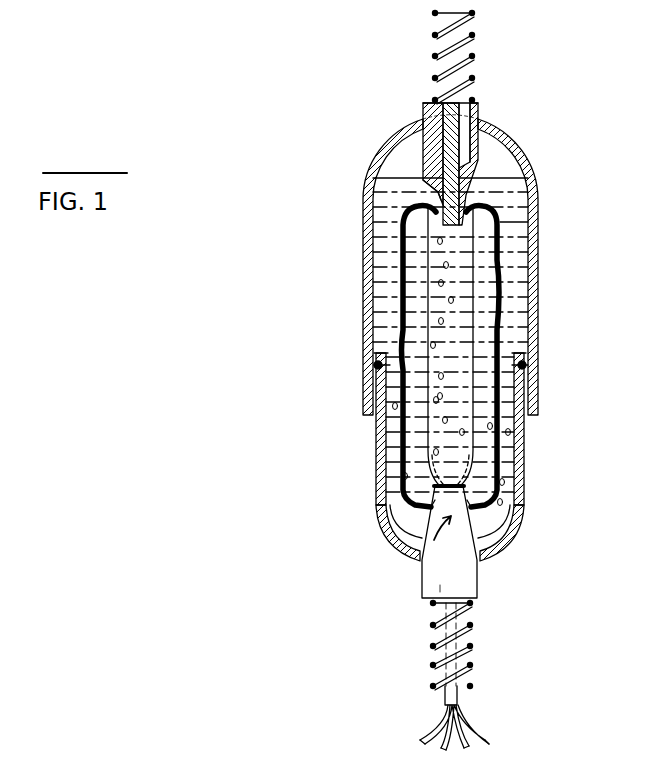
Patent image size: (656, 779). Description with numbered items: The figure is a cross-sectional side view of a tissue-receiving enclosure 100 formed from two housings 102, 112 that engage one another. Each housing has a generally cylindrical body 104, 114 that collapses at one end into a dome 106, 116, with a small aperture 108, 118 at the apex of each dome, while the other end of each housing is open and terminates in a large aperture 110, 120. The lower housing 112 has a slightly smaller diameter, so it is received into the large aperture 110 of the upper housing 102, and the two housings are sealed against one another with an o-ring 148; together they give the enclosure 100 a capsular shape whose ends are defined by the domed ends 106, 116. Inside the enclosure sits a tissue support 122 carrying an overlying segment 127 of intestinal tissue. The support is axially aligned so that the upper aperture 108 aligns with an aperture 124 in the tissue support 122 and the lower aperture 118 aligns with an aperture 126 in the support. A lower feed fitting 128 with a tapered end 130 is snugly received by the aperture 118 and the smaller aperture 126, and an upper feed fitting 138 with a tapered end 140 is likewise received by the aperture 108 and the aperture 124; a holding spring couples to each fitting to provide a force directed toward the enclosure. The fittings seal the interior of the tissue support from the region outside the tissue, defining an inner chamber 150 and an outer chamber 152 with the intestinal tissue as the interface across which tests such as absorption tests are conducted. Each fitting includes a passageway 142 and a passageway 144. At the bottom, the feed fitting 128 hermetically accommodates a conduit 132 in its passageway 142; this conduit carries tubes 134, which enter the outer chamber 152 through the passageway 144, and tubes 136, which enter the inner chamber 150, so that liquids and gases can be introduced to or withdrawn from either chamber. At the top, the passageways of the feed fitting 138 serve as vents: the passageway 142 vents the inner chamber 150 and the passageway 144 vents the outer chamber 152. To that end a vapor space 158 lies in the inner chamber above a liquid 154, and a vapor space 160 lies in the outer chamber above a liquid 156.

The tissue-receiving enclosure 100 is at (574, 100).
The housing 102 is at (333, 121).
The cylindrical-shape body 104 is at (363, 343).
The dome 106 is at (392, 158).
The small aperture 108 is at (482, 115).
The large aperture 110 is at (363, 418).
The housing 112 is at (371, 553).
The cylindrical-shape body 114 is at (520, 423).
The dome 116 is at (490, 558).
The small aperture 118 is at (448, 520).
The large aperture 120 is at (516, 350).
The tissue support 122 is at (415, 458).
The aperture 124 is at (472, 205).
The aperture 126 is at (483, 509).
The segment of intestinal tissue 127 is at (477, 447).
The lower feed fitting 128 is at (468, 584).
The tapered end 130 is at (425, 552).
The conduit 132 is at (457, 695).
The tubes 134 is at (493, 533).
The tubes 136 is at (393, 485).
The upper feed fitting 138 is at (433, 152).
The tapered end 140 is at (433, 178).
The passageway 142 is at (440, 110).
The passageway 144 is at (467, 160).
The o-ring 148 is at (521, 365).
The inner chamber 150 is at (500, 311).
The outer chamber 152 is at (512, 214).
The liquid 154 is at (467, 277).
The liquid 156 is at (517, 273).
The vapor space 158 is at (423, 235).
The vapor space 160 is at (488, 172).